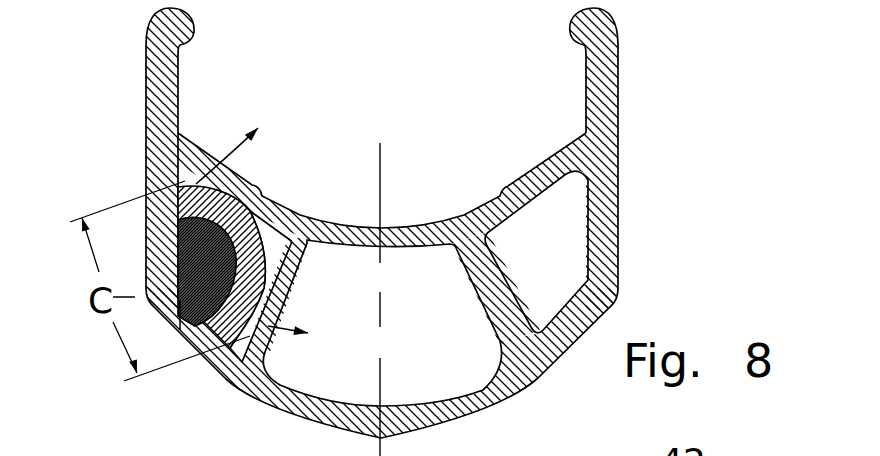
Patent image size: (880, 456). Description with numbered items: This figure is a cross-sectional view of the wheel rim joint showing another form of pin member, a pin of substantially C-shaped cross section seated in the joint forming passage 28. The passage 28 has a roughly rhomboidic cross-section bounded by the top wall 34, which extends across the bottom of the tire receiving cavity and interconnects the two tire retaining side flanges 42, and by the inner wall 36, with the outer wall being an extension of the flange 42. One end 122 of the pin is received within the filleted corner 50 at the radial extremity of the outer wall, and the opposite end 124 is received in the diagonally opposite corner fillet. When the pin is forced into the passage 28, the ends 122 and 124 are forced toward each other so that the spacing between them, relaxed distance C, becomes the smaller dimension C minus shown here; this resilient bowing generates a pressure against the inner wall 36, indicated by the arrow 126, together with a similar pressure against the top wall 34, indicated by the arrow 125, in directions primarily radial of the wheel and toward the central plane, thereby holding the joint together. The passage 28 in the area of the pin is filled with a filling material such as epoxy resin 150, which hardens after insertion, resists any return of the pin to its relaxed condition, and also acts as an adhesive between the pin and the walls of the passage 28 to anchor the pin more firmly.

The joint forming passage 28 is at (538, 297).
The top wall 34 is at (399, 229).
The inner wall 36 is at (289, 291).
The side flange 42 is at (143, 58).
The filleted corner 50 is at (575, 168).
The pin end 122 is at (187, 195).
The pin end 124 is at (214, 372).
The spoke axis direction 125 is at (260, 165).
The pressure arrow 126 is at (300, 368).
The epoxy resin filling material 150 is at (180, 300).